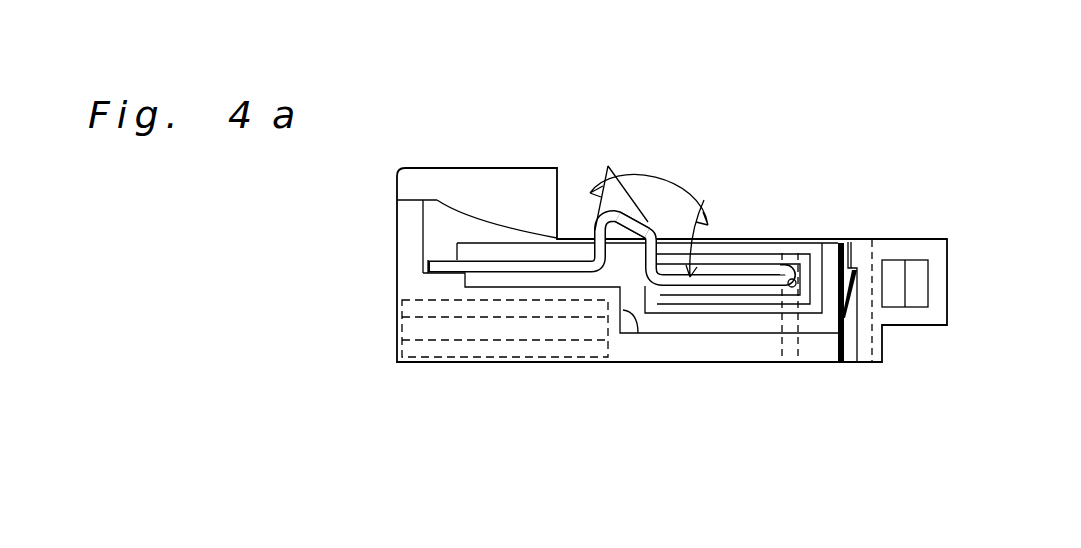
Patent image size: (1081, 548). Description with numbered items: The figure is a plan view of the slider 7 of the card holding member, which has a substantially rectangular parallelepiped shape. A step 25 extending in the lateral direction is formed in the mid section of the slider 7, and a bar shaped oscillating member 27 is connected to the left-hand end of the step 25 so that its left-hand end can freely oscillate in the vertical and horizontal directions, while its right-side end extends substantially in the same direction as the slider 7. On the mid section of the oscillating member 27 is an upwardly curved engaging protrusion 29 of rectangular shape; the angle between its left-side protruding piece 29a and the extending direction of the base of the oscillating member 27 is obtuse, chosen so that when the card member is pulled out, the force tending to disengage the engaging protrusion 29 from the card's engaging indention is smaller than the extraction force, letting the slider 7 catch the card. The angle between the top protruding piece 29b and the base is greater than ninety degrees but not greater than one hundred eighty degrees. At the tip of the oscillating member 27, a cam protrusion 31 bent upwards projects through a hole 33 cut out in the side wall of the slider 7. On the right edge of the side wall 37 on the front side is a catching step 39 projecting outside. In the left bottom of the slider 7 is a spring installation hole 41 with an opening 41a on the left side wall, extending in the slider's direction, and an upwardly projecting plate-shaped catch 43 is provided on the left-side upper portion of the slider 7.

The slider 7 is at (939, 166).
The step 25 is at (637, 320).
The oscillating member 27 is at (758, 268).
The engaging protrusion 29 is at (623, 211).
The left-side protruding piece 29a is at (590, 243).
The top protruding piece 29b is at (656, 226).
The cam protrusion 31 is at (794, 280).
The hole 33 is at (793, 366).
The side wall 37 is at (913, 318).
The catching step 39 is at (923, 285).
The spring installation hole 41 is at (427, 298).
The opening 41a is at (398, 338).
The catch 43 is at (473, 193).